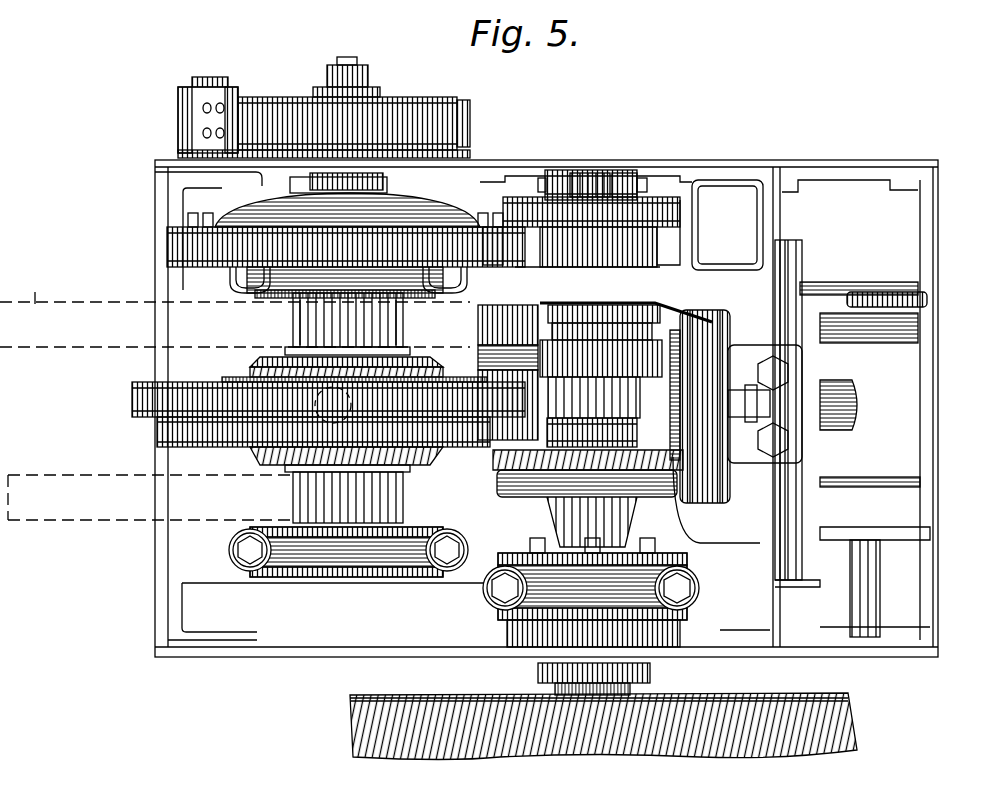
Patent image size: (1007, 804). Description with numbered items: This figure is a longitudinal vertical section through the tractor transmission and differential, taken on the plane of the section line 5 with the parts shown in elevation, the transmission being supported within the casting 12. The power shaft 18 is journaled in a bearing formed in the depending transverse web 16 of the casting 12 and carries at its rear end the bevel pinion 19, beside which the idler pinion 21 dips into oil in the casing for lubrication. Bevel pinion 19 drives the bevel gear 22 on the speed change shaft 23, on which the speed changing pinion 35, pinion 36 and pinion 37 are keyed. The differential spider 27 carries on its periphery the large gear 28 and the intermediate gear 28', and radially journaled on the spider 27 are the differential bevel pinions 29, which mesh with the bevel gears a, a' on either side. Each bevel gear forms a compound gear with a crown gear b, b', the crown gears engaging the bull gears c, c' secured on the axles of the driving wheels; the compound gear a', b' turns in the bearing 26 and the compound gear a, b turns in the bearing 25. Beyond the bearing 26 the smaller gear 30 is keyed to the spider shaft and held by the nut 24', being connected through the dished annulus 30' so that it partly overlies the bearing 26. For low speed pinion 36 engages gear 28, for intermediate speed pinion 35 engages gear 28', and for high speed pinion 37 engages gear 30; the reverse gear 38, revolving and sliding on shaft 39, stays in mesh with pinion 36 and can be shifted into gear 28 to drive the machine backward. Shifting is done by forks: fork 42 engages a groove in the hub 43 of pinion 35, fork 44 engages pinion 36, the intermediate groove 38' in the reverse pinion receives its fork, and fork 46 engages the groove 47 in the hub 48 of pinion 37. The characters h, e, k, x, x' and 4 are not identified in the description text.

The casting 12 is at (840, 160).
The upper gear h is at (462, 100).
The nut 24' is at (484, 119).
The bolt e is at (345, 56).
The differential spider 27 is at (350, 173).
The dished annulus 30' is at (364, 176).
The smaller gear 30 is at (302, 239).
The bearing 26 is at (330, 270).
The crown gear b' is at (333, 324).
The differential bevel pinions 29 is at (292, 330).
The direction arrow x' is at (245, 322).
The bull gear c' is at (235, 308).
The bevel gear a' is at (321, 365).
The large gear 28 is at (293, 402).
The intermediate gear 28' is at (285, 435).
The bevel gear a is at (323, 459).
The crown gear b is at (321, 494).
The direction arrow x is at (243, 515).
The bull gear c is at (147, 480).
The bearing 25 is at (340, 555).
The hub 48 is at (596, 172).
The groove 47 is at (575, 182).
The fork 46 is at (640, 176).
The pinion 37 is at (640, 200).
The speed change shaft 23 is at (620, 240).
The reverse gear 38 is at (508, 314).
The intermediate groove 38' is at (475, 343).
The shaft 39 is at (478, 357).
The pinion 36 is at (585, 350).
The fork 44 is at (690, 301).
The pinion 35 is at (548, 430).
The fork 42 is at (552, 445).
The hub 43 is at (583, 430).
The bevel gear 22 is at (548, 442).
The bevel pinion 19 is at (682, 345).
The idler pinion 21 is at (718, 503).
The depending transverse web 16 is at (782, 300).
The power shaft 18 is at (856, 385).
The wheel k is at (352, 728).
The section line 4 is at (587, 150).
The section line 5 is at (60, 330).